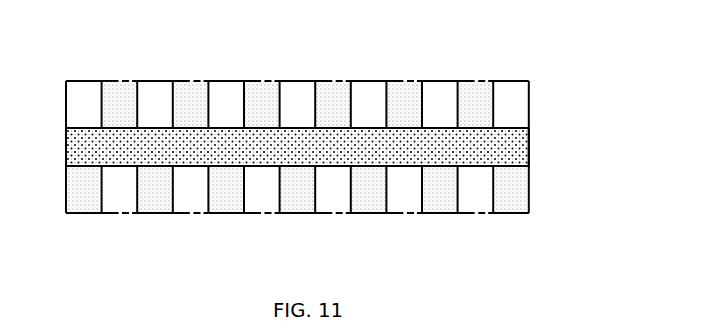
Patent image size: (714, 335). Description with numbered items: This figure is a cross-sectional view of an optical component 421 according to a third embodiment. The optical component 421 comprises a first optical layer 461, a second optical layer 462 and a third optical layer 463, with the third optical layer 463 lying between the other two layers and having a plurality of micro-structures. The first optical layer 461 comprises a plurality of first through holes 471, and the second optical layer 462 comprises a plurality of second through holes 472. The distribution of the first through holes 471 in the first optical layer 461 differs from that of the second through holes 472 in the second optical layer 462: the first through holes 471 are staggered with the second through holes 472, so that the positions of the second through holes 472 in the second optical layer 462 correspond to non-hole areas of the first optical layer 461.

The optical component 421 is at (337, 139).
The first optical layer 461 is at (529, 100).
The second optical layer 462 is at (529, 197).
The third optical layer 463 is at (529, 142).
The first through holes 471 is at (113, 100).
The second through holes 472 is at (83, 200).